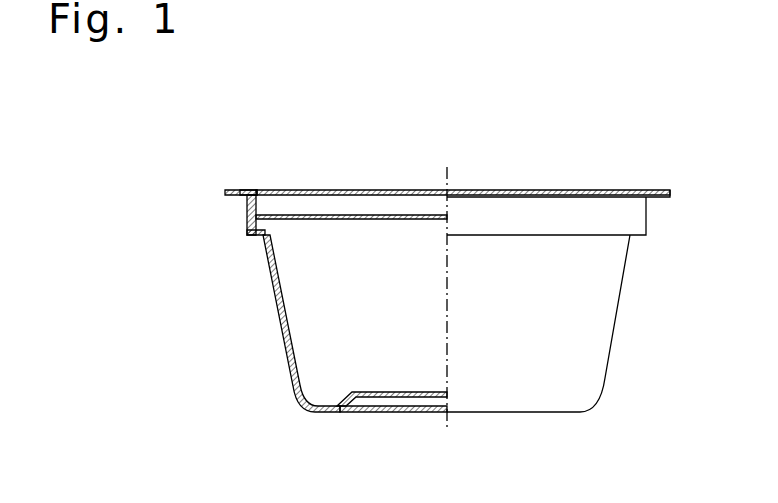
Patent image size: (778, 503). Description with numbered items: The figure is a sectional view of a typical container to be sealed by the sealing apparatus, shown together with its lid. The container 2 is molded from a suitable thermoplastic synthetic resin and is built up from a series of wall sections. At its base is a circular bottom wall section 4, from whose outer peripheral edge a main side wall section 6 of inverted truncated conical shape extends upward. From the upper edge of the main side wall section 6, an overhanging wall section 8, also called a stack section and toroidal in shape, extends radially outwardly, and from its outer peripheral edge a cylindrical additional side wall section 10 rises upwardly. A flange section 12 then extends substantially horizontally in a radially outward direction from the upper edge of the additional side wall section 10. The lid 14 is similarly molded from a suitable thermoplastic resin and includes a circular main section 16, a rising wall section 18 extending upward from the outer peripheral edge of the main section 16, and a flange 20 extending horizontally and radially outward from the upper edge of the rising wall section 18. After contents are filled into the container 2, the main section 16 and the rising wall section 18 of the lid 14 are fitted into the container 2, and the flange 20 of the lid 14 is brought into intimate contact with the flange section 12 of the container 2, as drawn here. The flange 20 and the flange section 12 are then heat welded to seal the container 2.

The container 2 is at (610, 352).
The bottom wall section 4 is at (386, 413).
The main side wall section 6 is at (285, 337).
The overhanging wall section 8 is at (256, 237).
The additional side wall section 10 is at (252, 223).
The flange section 12 is at (232, 193).
The lid 14 is at (568, 191).
The main section 16 is at (379, 215).
The rising wall section 18 is at (257, 212).
The flange 20 is at (240, 190).